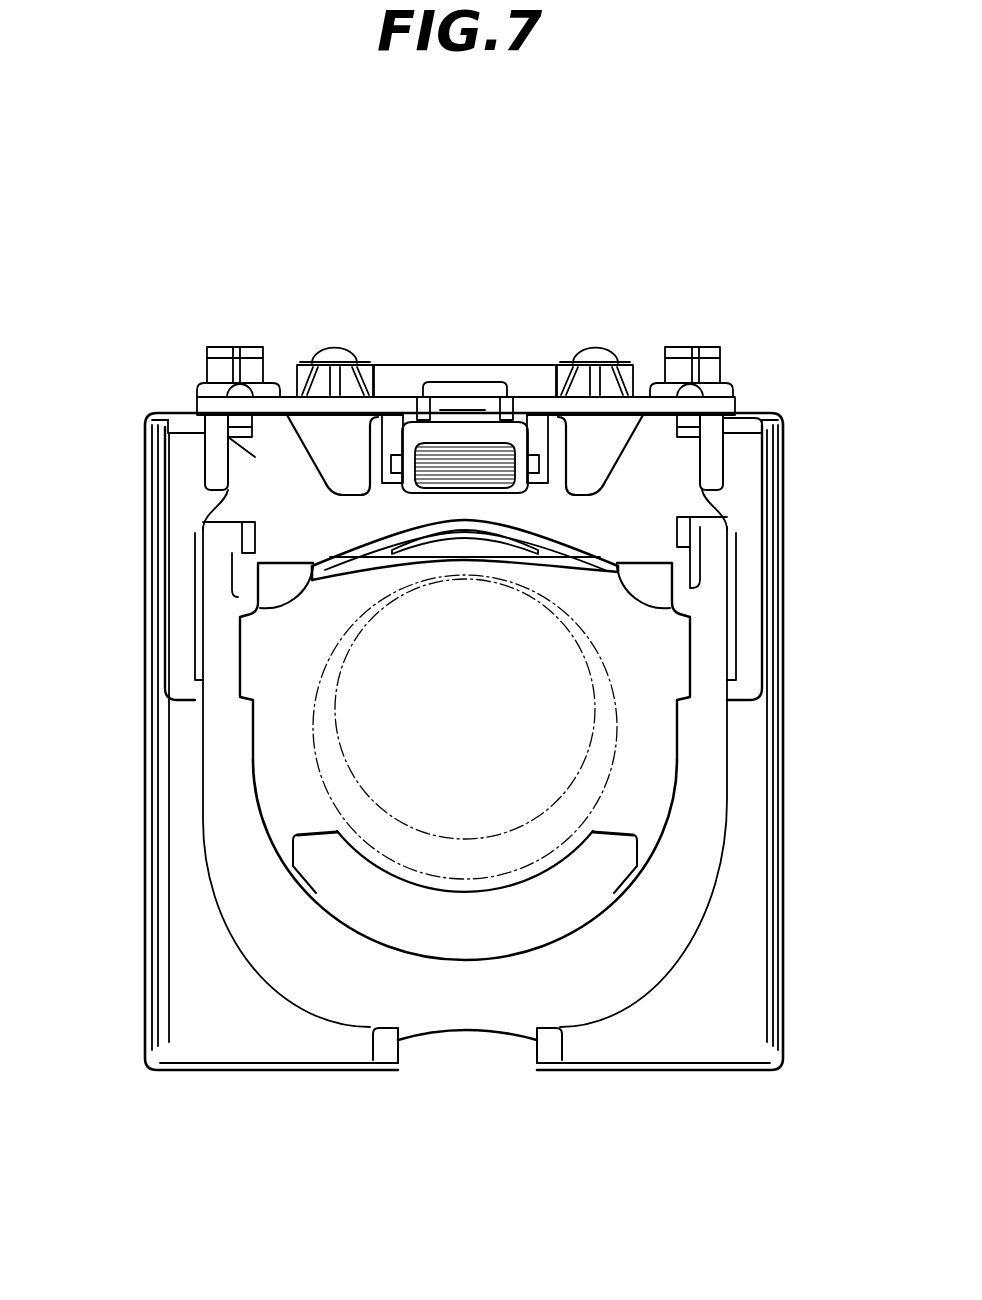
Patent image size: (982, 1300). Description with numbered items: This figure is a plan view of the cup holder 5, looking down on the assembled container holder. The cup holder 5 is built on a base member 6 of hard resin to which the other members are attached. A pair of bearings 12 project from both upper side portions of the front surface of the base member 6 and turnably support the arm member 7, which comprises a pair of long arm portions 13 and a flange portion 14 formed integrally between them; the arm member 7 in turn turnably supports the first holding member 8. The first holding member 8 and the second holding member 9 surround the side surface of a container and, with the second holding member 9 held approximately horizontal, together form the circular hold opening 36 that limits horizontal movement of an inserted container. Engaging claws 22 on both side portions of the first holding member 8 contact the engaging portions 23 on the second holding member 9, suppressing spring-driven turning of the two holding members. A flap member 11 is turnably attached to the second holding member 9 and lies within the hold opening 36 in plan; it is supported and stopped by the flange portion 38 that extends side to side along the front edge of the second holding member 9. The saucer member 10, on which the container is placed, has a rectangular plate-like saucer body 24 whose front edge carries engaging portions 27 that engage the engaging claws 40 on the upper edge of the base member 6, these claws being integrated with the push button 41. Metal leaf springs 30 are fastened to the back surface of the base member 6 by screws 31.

The cup holder 5 is at (817, 962).
The base member 6 is at (197, 393).
The arm member 7 is at (163, 648).
The first holding member 8 is at (322, 588).
The second holding member 9 is at (205, 862).
The saucer member 10 is at (254, 1080).
The flap member 11 is at (307, 833).
The bearings 12 is at (212, 437).
The arm portions 13 is at (180, 470).
The flange portion 14 is at (645, 443).
The engaging claws 22 is at (235, 524).
The engaging portions 23 is at (233, 550).
The saucer body 24 is at (757, 923).
The engaging portions 27 is at (388, 1058).
The leaf springs 30 is at (353, 350).
The screws 31 is at (322, 347).
The hold opening 36 is at (268, 805).
The flange portion 38 is at (447, 972).
The engaging claws 40 is at (386, 473).
The push button 41 is at (465, 447).